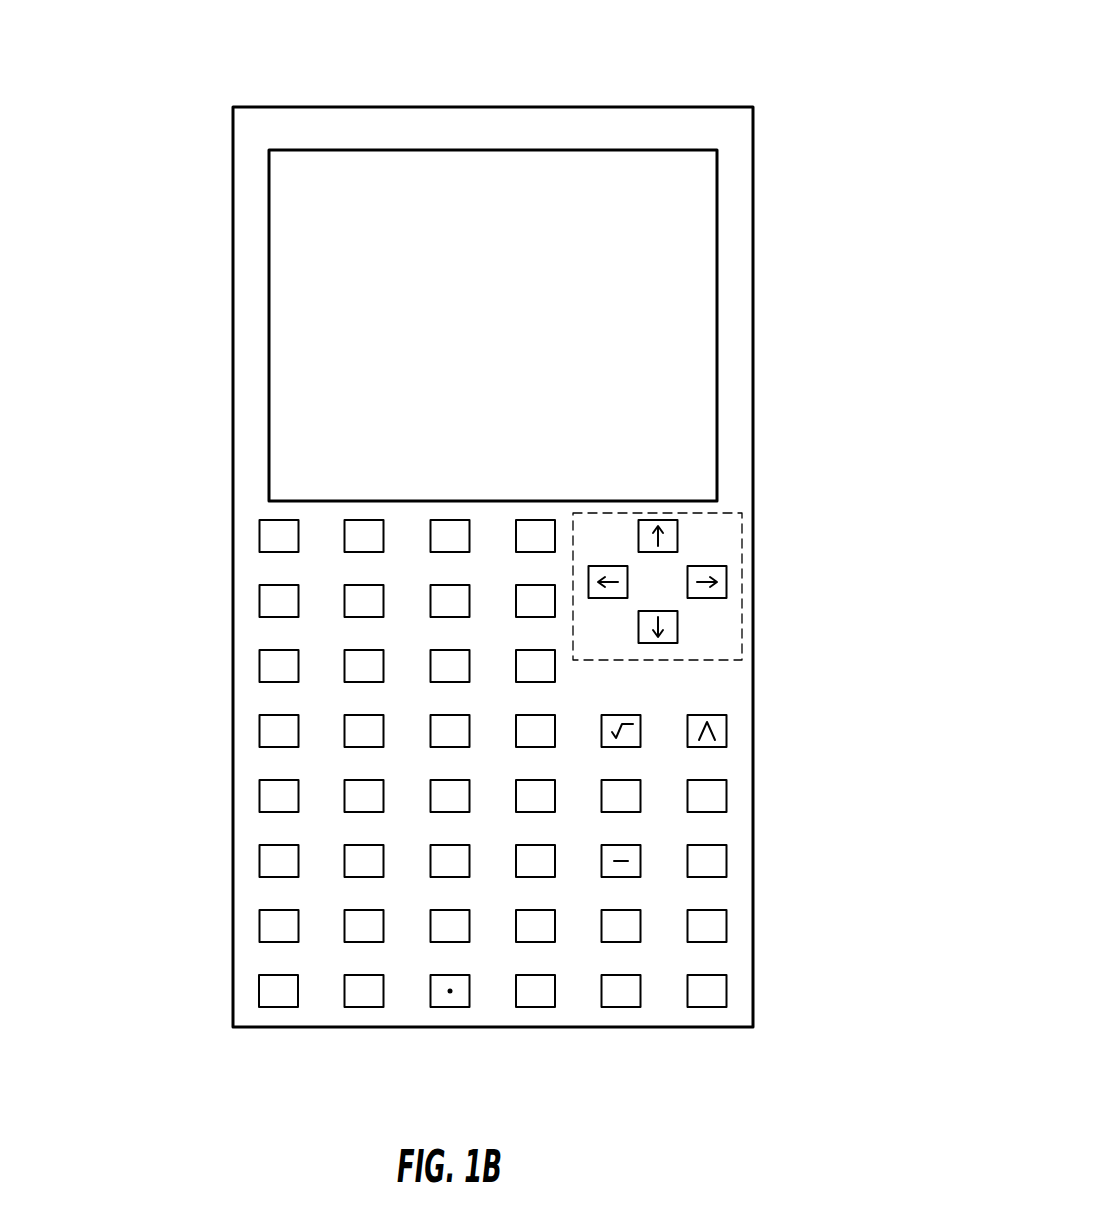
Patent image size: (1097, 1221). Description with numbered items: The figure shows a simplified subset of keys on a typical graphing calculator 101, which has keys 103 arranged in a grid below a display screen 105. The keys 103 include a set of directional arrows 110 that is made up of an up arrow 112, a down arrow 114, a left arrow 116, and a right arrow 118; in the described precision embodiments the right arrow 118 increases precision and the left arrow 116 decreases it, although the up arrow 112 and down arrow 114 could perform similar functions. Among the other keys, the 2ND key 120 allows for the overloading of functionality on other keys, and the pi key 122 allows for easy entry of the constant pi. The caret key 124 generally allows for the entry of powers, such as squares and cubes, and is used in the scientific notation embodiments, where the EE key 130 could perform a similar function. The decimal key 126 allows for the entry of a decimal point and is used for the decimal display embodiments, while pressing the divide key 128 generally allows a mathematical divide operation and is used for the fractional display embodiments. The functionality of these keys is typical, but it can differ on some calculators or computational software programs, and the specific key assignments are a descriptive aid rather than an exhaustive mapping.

The graphing calculator 101 is at (800, 230).
The display screen 105 is at (607, 337).
The keys 103 is at (195, 458).
The set of directional arrows 110 is at (745, 554).
The up arrow 112 is at (670, 537).
The left arrow 116 is at (628, 590).
The right arrow 118 is at (727, 585).
The down arrow 114 is at (672, 637).
The 2ND key 120 is at (265, 531).
The EE key 130 is at (265, 596).
The pi key 122 is at (265, 920).
The caret key 124 is at (723, 742).
The divide key 128 is at (635, 807).
The decimal key 126 is at (450, 1007).